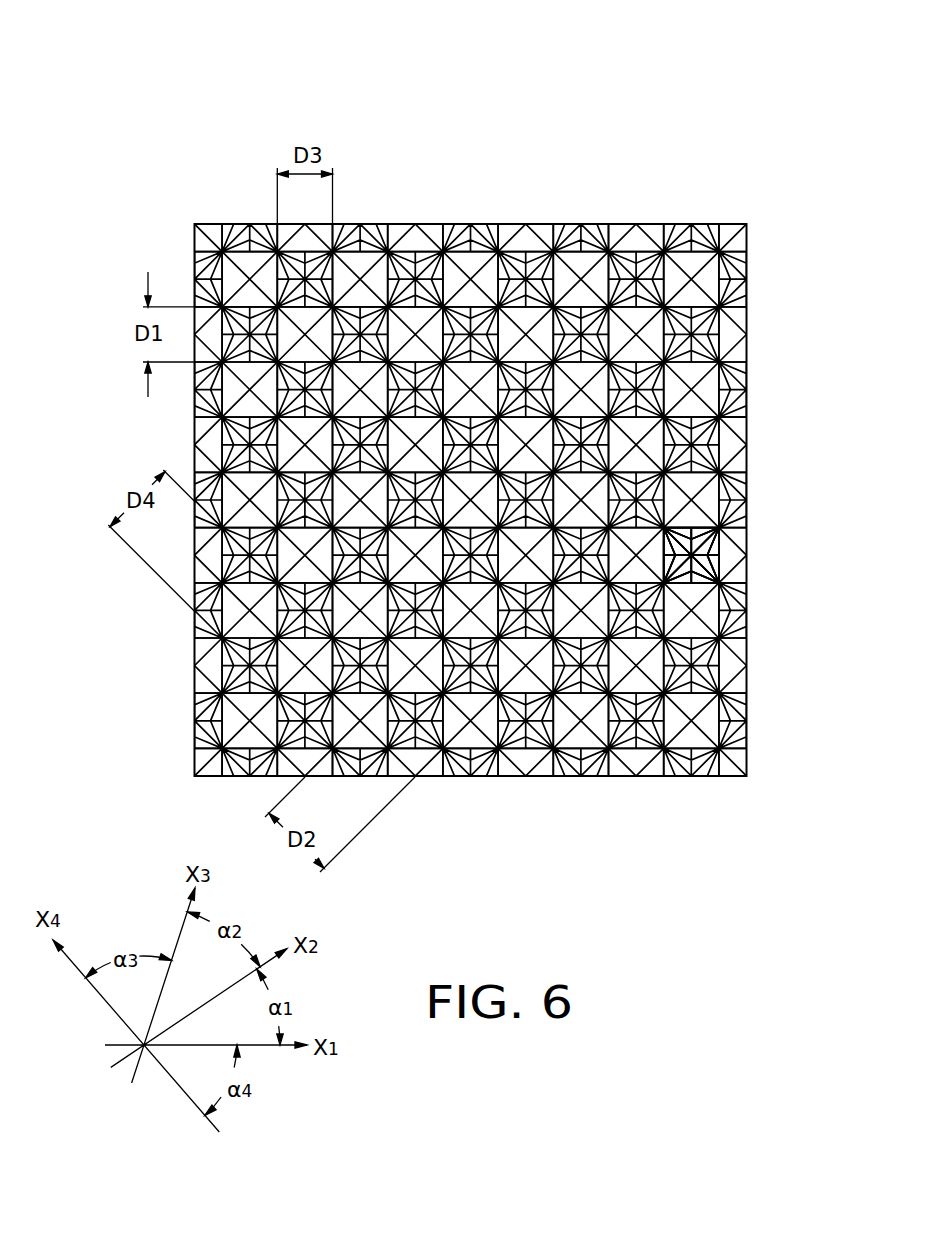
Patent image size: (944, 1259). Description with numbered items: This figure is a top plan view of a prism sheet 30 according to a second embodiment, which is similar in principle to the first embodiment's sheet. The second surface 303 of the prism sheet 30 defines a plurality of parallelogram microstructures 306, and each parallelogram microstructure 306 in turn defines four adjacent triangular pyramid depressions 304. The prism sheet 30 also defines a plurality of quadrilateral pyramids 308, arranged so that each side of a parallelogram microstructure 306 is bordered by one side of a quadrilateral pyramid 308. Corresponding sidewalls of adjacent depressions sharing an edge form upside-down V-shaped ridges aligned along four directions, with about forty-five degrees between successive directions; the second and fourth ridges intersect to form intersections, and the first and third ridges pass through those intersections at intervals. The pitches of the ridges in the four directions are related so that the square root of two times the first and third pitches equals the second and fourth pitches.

The prism sheet 30 is at (275, 65).
The second surface 303 is at (727, 583).
The triangular pyramid depressions 304 is at (716, 557).
The parallelogram microstructures 306 is at (700, 552).
The quadrilateral pyramids 308 is at (730, 420).